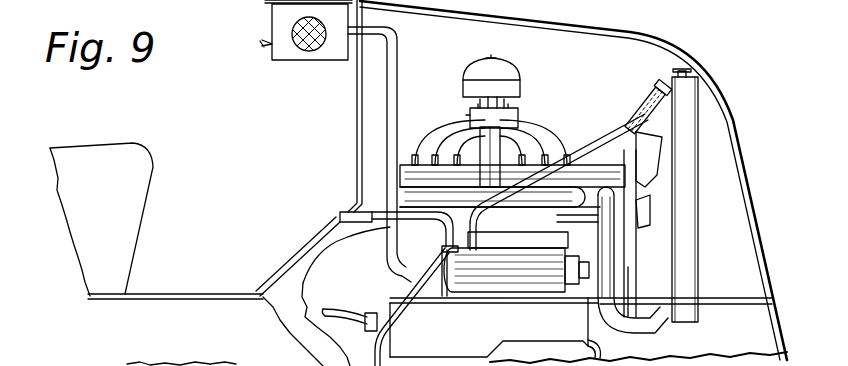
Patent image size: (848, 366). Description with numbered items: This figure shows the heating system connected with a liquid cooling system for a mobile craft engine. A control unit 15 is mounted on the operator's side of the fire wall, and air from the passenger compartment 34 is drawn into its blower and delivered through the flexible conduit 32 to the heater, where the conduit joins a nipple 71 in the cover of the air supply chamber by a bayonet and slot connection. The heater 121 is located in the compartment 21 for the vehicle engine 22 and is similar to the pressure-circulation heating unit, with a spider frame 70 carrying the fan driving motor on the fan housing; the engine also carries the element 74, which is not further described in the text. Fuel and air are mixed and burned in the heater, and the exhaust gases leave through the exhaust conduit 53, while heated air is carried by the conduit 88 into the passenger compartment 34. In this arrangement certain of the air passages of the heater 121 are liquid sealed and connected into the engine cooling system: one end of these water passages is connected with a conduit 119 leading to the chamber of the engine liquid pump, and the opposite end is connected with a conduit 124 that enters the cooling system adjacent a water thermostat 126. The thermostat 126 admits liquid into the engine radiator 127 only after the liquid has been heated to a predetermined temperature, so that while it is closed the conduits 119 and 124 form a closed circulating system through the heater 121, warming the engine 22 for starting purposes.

The control unit 15 is at (268, 13).
The compartment 21 is at (548, 2).
The vehicle engine 22 is at (433, 127).
The flexible conduit 32 is at (397, 59).
The passenger compartment 34 is at (262, 166).
The exhaust conduit 53 is at (390, 308).
The spider frame 70 is at (580, 293).
The nipple 71 is at (442, 302).
The exhaust manifold 74 is at (504, 200).
The conduit 88 is at (412, 220).
The conduit 119 is at (560, 218).
The heater 121 is at (507, 287).
The conduit 124 is at (582, 131).
The water thermostat 126 is at (640, 102).
The engine radiator 127 is at (699, 252).